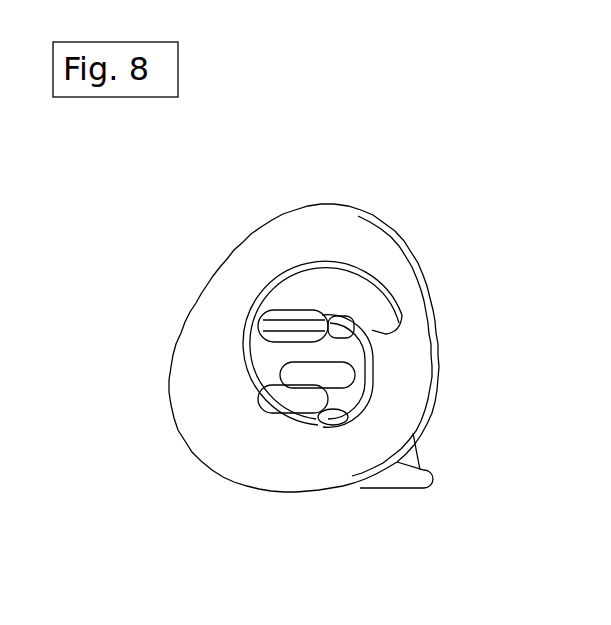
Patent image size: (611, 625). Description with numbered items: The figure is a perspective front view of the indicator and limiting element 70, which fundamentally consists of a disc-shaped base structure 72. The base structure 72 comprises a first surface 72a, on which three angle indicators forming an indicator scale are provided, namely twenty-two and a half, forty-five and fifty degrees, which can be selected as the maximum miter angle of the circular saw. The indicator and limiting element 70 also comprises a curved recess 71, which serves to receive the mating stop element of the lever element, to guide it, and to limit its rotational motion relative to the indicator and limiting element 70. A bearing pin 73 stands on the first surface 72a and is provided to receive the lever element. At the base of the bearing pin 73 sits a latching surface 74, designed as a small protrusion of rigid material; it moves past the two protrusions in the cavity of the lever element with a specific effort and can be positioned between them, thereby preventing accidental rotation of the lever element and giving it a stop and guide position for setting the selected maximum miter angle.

The indicator and limiting element 70 is at (370, 440).
The curved recess 71 is at (331, 290).
The disc-shaped base structure 72 is at (415, 373).
The first surface 72a is at (220, 460).
The bearing pin 73 is at (327, 353).
The latching surface 74 is at (332, 410).